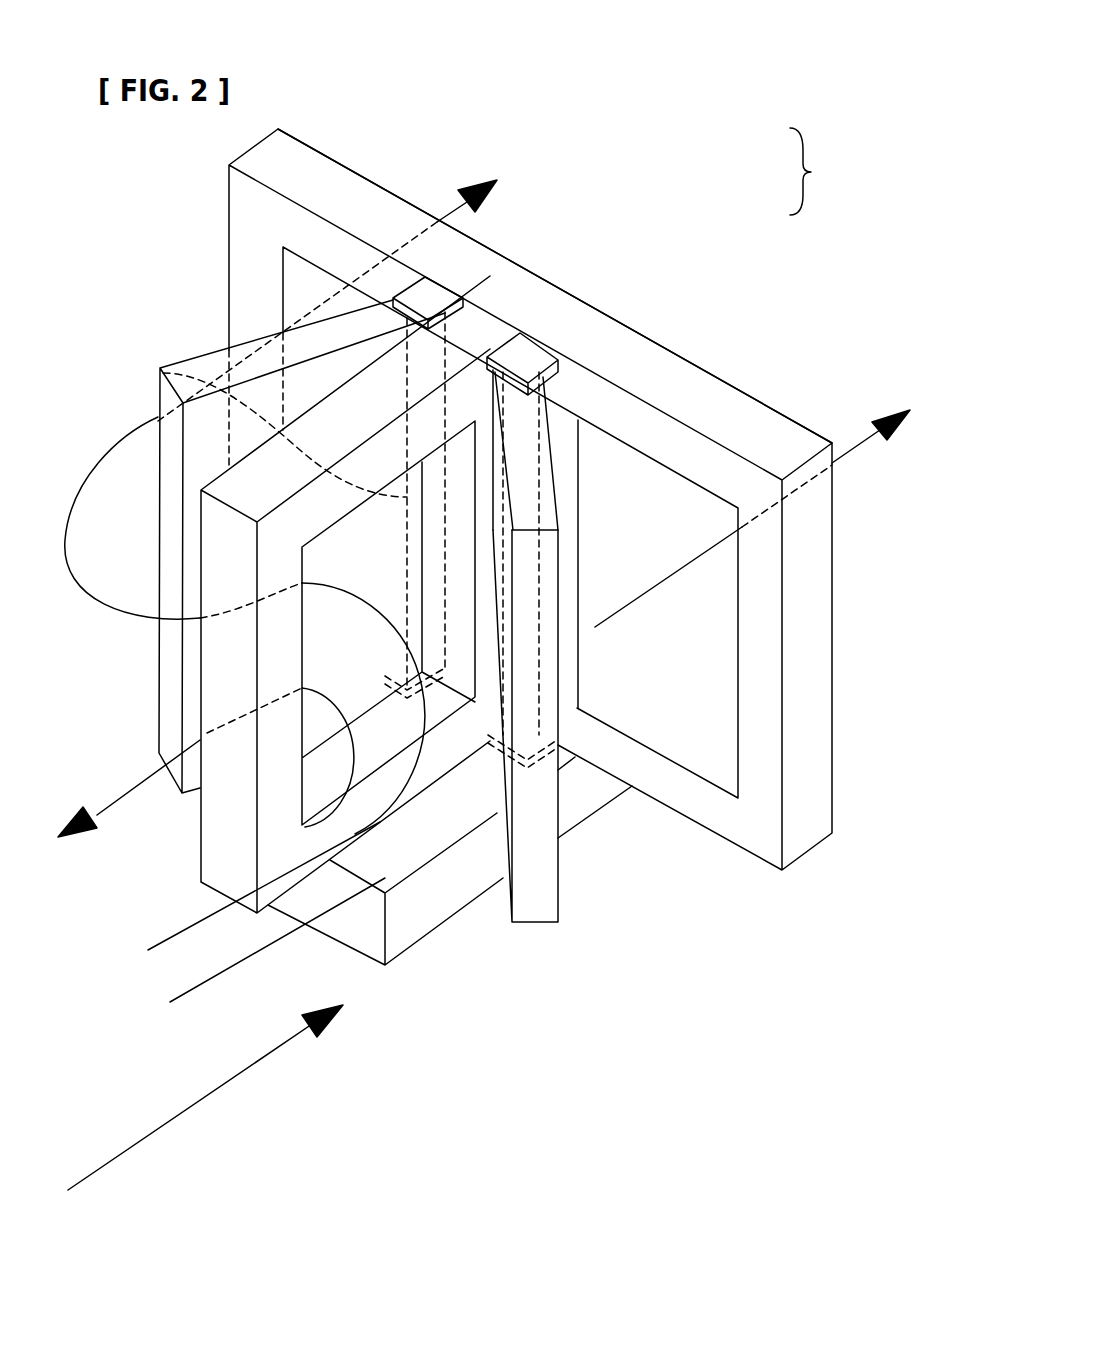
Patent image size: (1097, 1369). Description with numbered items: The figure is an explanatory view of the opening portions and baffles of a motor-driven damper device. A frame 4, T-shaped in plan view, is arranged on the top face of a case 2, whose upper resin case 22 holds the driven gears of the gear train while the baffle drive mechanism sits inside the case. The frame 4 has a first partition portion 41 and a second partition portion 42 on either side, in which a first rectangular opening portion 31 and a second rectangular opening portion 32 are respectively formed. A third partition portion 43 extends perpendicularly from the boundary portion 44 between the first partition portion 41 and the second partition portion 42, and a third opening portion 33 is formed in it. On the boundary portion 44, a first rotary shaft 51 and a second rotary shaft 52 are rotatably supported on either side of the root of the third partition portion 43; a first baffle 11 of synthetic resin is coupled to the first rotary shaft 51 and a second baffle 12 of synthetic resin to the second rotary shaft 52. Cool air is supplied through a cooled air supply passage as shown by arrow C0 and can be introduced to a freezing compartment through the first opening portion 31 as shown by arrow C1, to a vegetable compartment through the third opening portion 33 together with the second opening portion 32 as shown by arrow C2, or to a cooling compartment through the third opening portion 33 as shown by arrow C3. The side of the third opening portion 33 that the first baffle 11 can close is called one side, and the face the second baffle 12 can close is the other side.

The case 2 is at (583, 803).
The first baffle 11 is at (560, 418).
The second baffle 12 is at (186, 358).
The upper resin case 22 is at (427, 830).
The first opening portion 31 is at (742, 605).
The second opening portion 32 is at (313, 260).
The third opening portion 33 is at (302, 738).
The frame 4 is at (813, 171).
The first partition portion 41 is at (585, 318).
The second partition portion 42 is at (448, 243).
The third partition portion 43 is at (463, 337).
The boundary portion 44 is at (543, 340).
The first rotary shaft 51 is at (555, 462).
The second rotary shaft 52 is at (160, 368).
The arrow C0 is at (205, 1097).
The arrow C1 is at (775, 502).
The arrow C2 is at (255, 958).
The arrow C3 is at (241, 901).